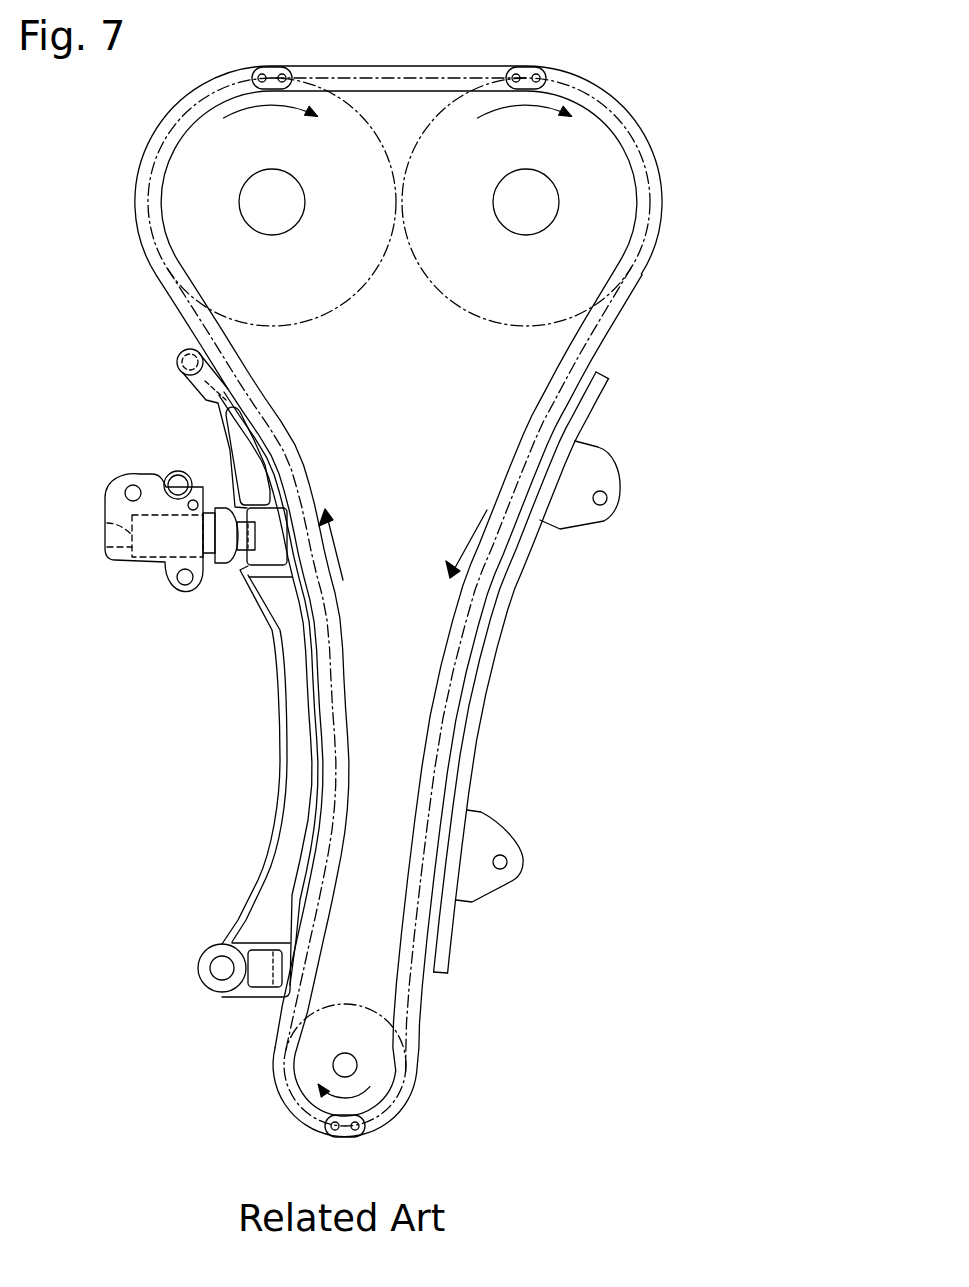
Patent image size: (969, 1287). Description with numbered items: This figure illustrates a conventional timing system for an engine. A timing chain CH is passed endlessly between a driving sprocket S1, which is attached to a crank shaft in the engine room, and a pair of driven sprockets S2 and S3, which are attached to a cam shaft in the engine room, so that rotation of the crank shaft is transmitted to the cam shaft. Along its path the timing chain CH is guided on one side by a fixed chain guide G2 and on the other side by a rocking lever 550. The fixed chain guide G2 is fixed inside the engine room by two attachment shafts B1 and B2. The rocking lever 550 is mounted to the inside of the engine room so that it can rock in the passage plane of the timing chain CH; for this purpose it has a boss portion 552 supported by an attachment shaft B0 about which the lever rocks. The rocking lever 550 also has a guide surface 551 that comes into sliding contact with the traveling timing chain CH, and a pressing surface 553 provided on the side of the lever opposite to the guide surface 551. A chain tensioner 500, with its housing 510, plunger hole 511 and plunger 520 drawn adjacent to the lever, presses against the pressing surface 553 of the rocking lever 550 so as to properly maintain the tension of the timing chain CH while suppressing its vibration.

The timing chain CH is at (600, 328).
The driving sprocket S1 is at (380, 1062).
The driven sprocket S2 is at (186, 194).
The driven sprocket S3 is at (596, 187).
The fixed chain guide G2 is at (472, 718).
The attachment shaft B1 is at (608, 498).
The attachment shaft B2 is at (508, 862).
The attachment shaft B0 is at (215, 968).
The chain tensioner 500 is at (145, 542).
The tensioner housing 510 is at (175, 560).
The plunger hole 511 is at (110, 519).
The plunger 520 is at (210, 528).
The rocking lever 550 is at (229, 673).
The guide surface 551 is at (326, 720).
The boss portion 552 is at (208, 950).
The pressing surface 553 is at (224, 566).